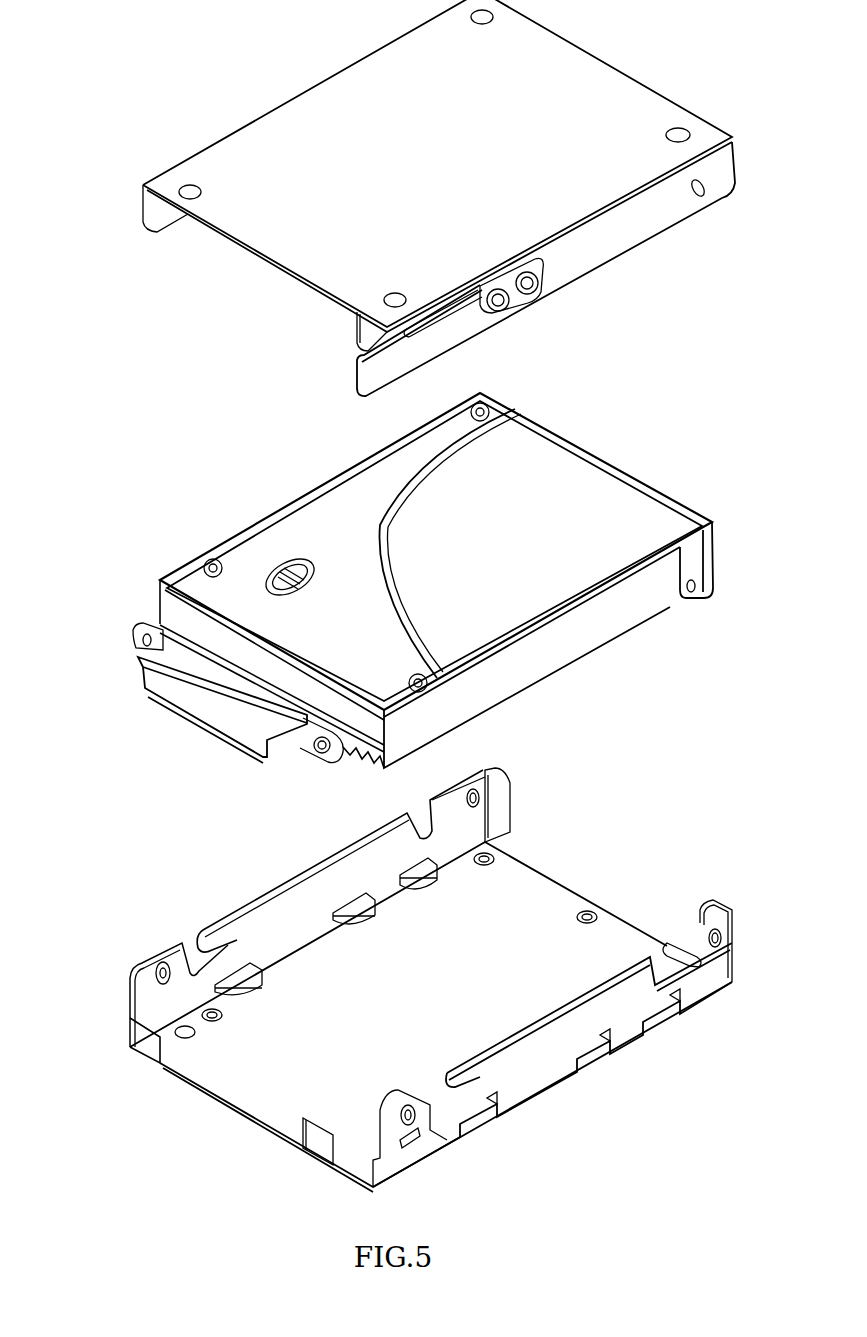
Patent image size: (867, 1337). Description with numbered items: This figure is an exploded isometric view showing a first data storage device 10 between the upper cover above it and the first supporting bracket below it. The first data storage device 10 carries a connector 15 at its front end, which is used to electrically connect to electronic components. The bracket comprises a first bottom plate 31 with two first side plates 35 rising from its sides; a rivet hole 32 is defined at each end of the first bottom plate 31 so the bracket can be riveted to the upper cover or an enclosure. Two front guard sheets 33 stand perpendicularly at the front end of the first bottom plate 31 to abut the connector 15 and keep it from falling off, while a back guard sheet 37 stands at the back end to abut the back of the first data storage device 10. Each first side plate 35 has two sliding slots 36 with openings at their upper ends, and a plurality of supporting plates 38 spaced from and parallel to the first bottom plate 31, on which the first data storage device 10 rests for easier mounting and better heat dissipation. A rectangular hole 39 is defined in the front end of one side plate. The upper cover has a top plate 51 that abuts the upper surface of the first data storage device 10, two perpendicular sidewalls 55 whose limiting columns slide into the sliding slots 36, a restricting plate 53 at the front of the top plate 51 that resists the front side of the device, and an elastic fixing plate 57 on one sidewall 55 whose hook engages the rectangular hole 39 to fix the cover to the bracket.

The first data storage device 10 is at (600, 470).
The connector 15 is at (200, 676).
The first bottom plate 31 is at (222, 1085).
The rivet hole 32 is at (165, 1020).
The front guard sheet 33 is at (318, 1150).
The first side plate 35 is at (545, 1065).
The sliding slot 36 is at (492, 1110).
The back guard sheet 37 is at (500, 812).
The supporting plate 38 is at (418, 878).
The rectangular hole 39 is at (410, 1148).
The top plate 51 is at (587, 78).
The restricting plate 53 is at (356, 327).
The sidewall 55 is at (650, 218).
The elastic fixing plate 57 is at (457, 325).